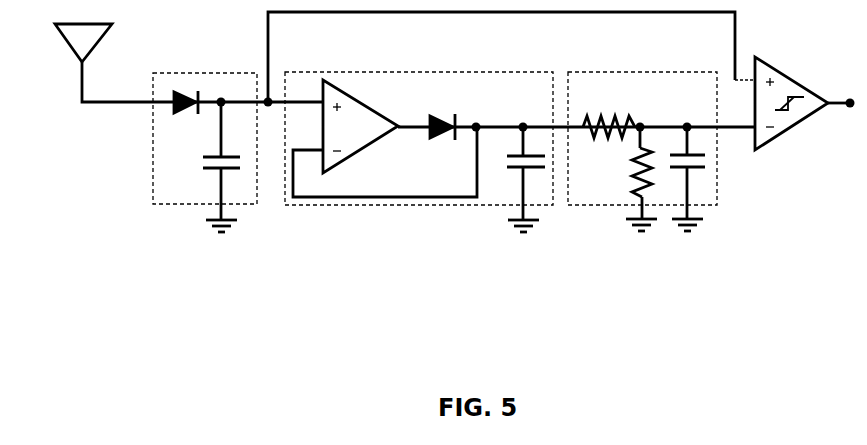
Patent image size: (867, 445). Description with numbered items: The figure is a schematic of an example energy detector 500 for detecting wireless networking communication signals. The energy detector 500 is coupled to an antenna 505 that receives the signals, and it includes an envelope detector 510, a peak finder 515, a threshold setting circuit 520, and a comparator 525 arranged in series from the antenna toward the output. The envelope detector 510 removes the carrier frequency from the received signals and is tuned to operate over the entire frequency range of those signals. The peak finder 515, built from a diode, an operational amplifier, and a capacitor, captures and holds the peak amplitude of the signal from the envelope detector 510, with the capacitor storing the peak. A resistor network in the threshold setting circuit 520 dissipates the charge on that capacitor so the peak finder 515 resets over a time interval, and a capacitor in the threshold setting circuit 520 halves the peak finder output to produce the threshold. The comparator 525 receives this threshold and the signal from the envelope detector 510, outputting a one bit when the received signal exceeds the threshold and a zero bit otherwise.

The energy detector 500 is at (769, 357).
The antenna 505 is at (62, 56).
The envelope detector 510 is at (172, 206).
The peak finder 515 is at (360, 207).
The threshold setting circuit 520 is at (612, 207).
The comparator 525 is at (775, 146).